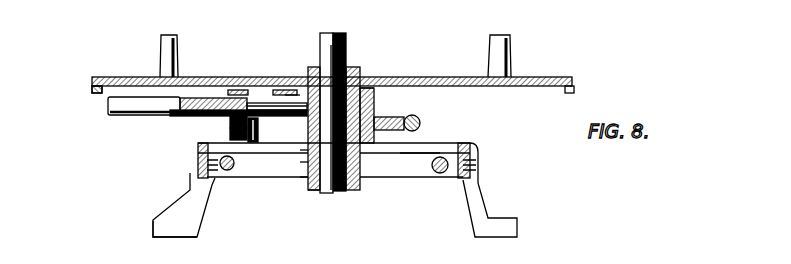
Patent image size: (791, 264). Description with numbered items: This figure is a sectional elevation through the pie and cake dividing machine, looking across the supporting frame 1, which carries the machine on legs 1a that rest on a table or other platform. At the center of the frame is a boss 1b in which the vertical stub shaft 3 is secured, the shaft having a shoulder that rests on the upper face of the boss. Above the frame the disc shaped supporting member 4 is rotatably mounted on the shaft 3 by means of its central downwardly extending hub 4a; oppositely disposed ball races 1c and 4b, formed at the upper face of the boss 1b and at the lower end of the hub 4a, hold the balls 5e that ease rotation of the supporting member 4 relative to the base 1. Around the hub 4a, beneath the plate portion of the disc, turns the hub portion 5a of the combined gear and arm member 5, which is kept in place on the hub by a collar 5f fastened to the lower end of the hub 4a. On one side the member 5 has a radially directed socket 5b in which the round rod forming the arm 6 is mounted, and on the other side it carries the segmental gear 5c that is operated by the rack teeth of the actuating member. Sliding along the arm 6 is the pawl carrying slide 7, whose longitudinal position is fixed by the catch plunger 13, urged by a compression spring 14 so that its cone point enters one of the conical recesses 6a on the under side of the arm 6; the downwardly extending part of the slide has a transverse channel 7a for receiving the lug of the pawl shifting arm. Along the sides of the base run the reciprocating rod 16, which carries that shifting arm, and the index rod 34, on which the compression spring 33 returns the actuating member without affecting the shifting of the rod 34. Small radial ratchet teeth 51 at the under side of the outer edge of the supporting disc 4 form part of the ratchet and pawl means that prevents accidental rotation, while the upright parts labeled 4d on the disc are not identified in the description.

The supporting frame 1 is at (190, 183).
The legs 1a is at (153, 229).
The boss 1b is at (306, 191).
The ball race 1c is at (306, 178).
The vertical stub shaft 3 is at (347, 49).
The supporting member 4 is at (574, 85).
The hub 4a is at (315, 76).
The ball race 4b is at (292, 96).
The plate upright post 4d is at (173, 45).
The combined gear and arm member 5 is at (380, 117).
The hub portion 5a is at (375, 88).
The socket 5b is at (281, 98).
The segmental gear 5c is at (398, 117).
The balls 5e is at (306, 163).
The collar 5f is at (303, 150).
The arm 6 is at (108, 110).
The conical recesses 6a is at (182, 116).
The pawl carrying slide 7 is at (243, 98).
The transverse channel 7a is at (250, 142).
The catch plunger 13 is at (230, 122).
The compression spring 14 is at (240, 130).
The rod 16 is at (226, 170).
The spring 33 is at (434, 170).
The index rod 34 is at (442, 172).
The ratchet teeth 51 is at (97, 88).